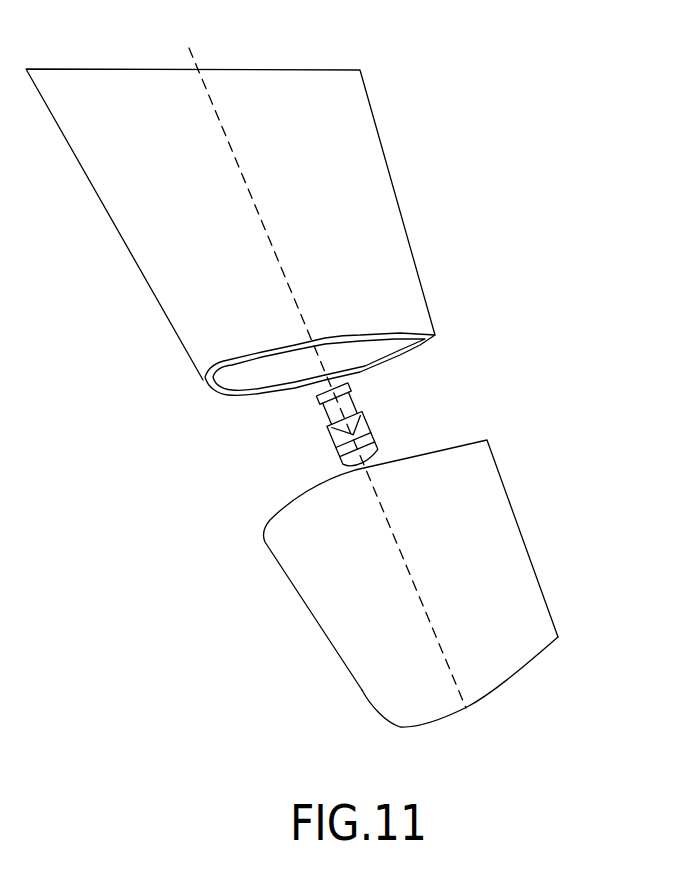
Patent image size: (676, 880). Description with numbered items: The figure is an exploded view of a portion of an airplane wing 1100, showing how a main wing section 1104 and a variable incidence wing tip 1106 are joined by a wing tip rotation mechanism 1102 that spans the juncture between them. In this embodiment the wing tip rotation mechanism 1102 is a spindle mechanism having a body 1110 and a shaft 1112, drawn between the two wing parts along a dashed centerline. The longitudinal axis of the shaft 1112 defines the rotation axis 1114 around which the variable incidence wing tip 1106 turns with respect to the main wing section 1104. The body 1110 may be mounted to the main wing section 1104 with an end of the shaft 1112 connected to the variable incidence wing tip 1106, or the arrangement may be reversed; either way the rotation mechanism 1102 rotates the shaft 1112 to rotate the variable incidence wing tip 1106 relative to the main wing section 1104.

The airplane wing 1100 is at (498, 203).
The wing tip rotation mechanism 1102 is at (349, 434).
The main wing section 1104 is at (383, 257).
The variable incidence wing tip 1106 is at (435, 592).
The body 1110 is at (328, 410).
The shaft 1112 is at (338, 448).
The rotation axis 1114 is at (476, 715).